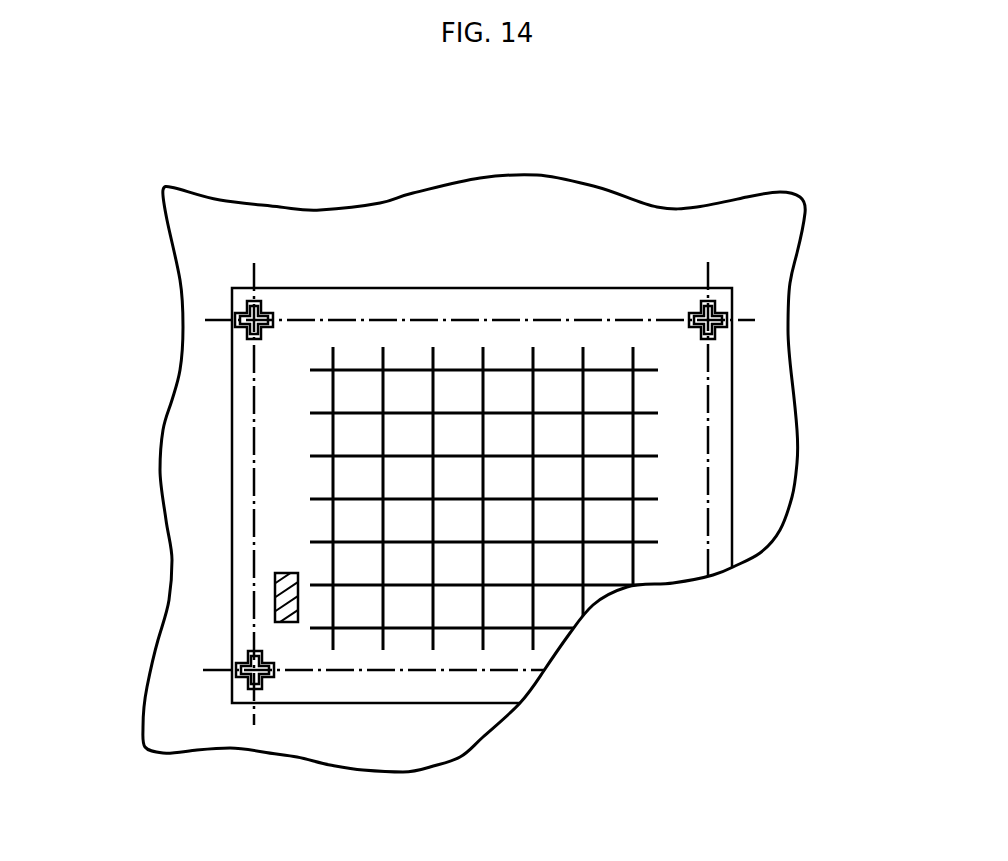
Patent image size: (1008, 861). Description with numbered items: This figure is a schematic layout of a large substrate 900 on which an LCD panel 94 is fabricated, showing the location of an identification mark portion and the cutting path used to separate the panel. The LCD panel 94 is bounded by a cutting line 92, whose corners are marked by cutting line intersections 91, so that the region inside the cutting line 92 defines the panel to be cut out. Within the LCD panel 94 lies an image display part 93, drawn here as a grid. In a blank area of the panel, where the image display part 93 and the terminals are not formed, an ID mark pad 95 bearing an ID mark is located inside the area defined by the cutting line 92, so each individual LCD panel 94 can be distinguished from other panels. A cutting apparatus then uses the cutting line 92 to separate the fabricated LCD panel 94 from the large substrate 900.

The large substrate 900 is at (663, 227).
The LCD panel 94 is at (417, 272).
The cutting line intersection 91 is at (728, 318).
The cutting line 92 is at (363, 670).
The image display part 93 is at (303, 460).
The ID mark pad 95 is at (275, 592).